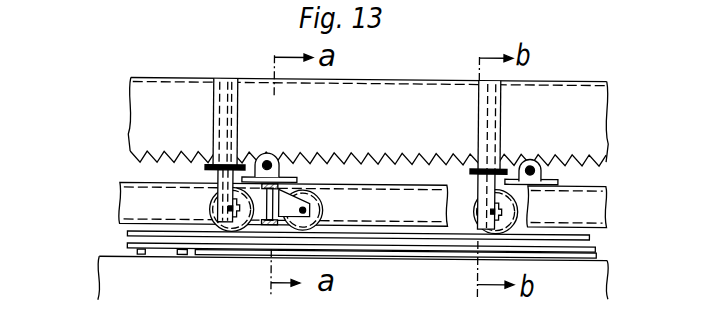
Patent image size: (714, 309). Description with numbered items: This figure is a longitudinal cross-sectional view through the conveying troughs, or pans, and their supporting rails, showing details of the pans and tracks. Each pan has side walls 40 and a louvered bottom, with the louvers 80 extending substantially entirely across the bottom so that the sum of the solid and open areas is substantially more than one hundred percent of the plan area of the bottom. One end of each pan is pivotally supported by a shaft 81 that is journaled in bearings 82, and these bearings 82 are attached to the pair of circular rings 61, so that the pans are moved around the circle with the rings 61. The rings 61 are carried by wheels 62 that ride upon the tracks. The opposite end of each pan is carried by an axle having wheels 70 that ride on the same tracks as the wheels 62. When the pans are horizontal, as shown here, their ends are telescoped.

The side walls 40 is at (137, 109).
The circular rings 61 is at (127, 206).
The wheels 62 is at (323, 212).
The wheels 70 is at (213, 211).
The louvers 80 is at (408, 153).
The shaft 81 is at (268, 162).
The bearings 82 is at (278, 174).